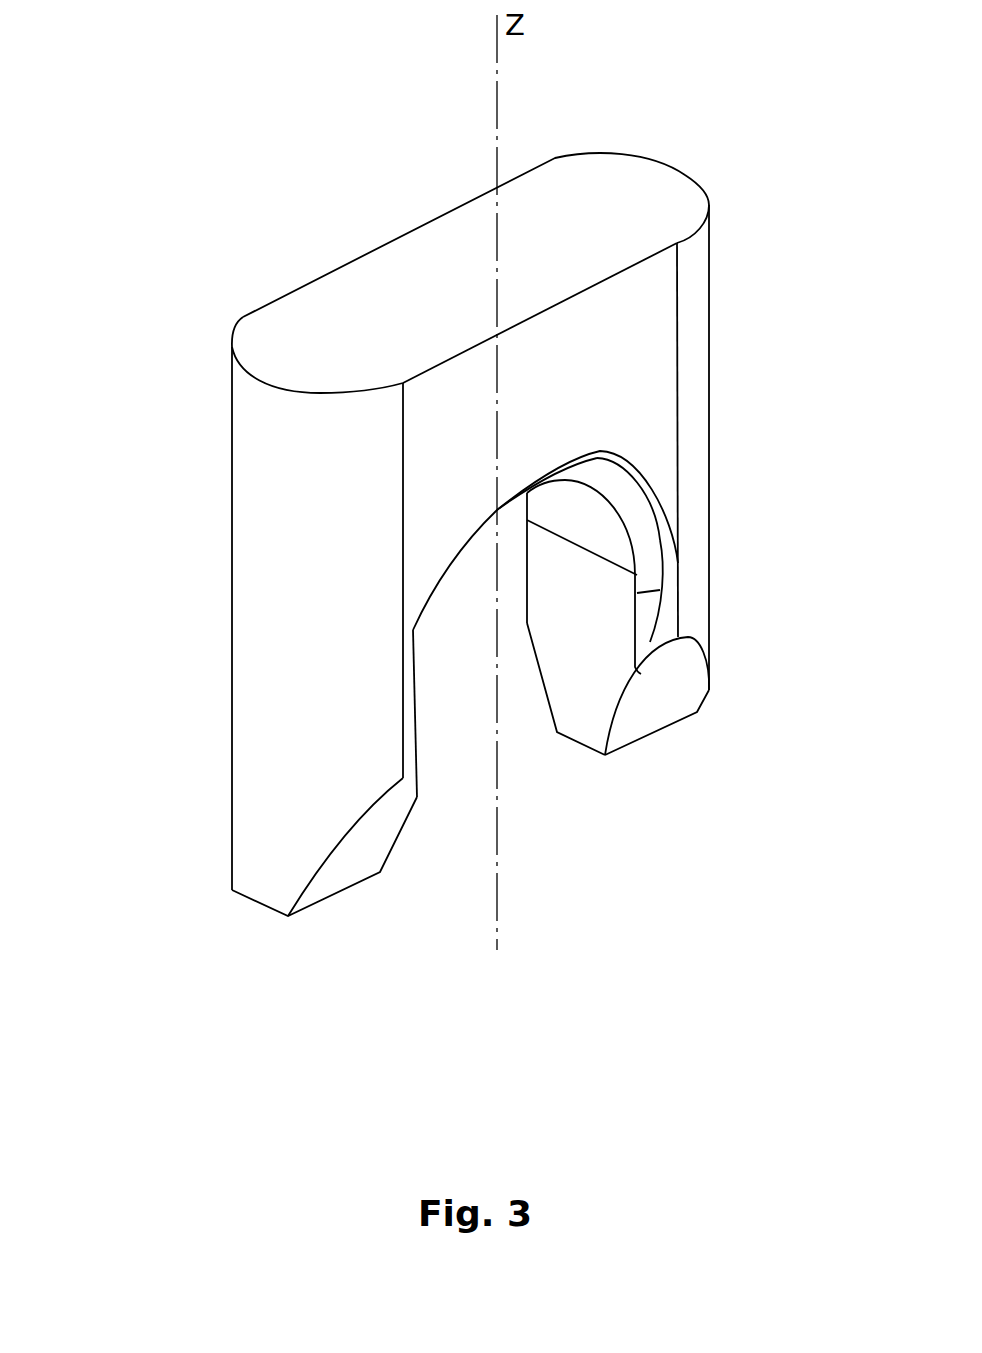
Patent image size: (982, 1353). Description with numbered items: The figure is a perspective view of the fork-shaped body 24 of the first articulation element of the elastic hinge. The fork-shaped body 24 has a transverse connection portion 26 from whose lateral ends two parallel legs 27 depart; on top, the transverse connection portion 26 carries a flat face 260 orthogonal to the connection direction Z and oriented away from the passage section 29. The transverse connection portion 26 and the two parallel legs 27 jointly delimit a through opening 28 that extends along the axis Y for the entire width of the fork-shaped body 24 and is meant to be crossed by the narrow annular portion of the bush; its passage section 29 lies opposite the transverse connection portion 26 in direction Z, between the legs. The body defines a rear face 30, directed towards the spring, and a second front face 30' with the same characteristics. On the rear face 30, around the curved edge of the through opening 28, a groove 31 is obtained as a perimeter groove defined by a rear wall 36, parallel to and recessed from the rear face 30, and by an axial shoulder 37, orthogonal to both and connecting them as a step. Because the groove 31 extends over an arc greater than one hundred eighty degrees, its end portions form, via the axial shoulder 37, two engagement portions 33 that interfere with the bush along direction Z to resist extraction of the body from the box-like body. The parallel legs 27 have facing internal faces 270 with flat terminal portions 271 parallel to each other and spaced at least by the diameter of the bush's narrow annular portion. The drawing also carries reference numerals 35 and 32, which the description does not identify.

The fork-shaped body 24 is at (172, 120).
The flat face 260 is at (607, 212).
The transverse connection portion 26 is at (633, 340).
The parallel legs 27 is at (295, 803).
The through opening 28 is at (478, 585).
The passage section 29 is at (441, 858).
The rear face 30 is at (338, 655).
The second front face 30' is at (215, 580).
The groove 31 is at (648, 570).
The side wall 32 is at (680, 594).
The engagement portions 33 is at (405, 778).
The arch 35 is at (585, 472).
The rear wall 36 is at (637, 593).
The axial shoulder 37 is at (660, 540).
The internal faces 270 is at (582, 665).
The flat terminal portions 271 is at (599, 725).